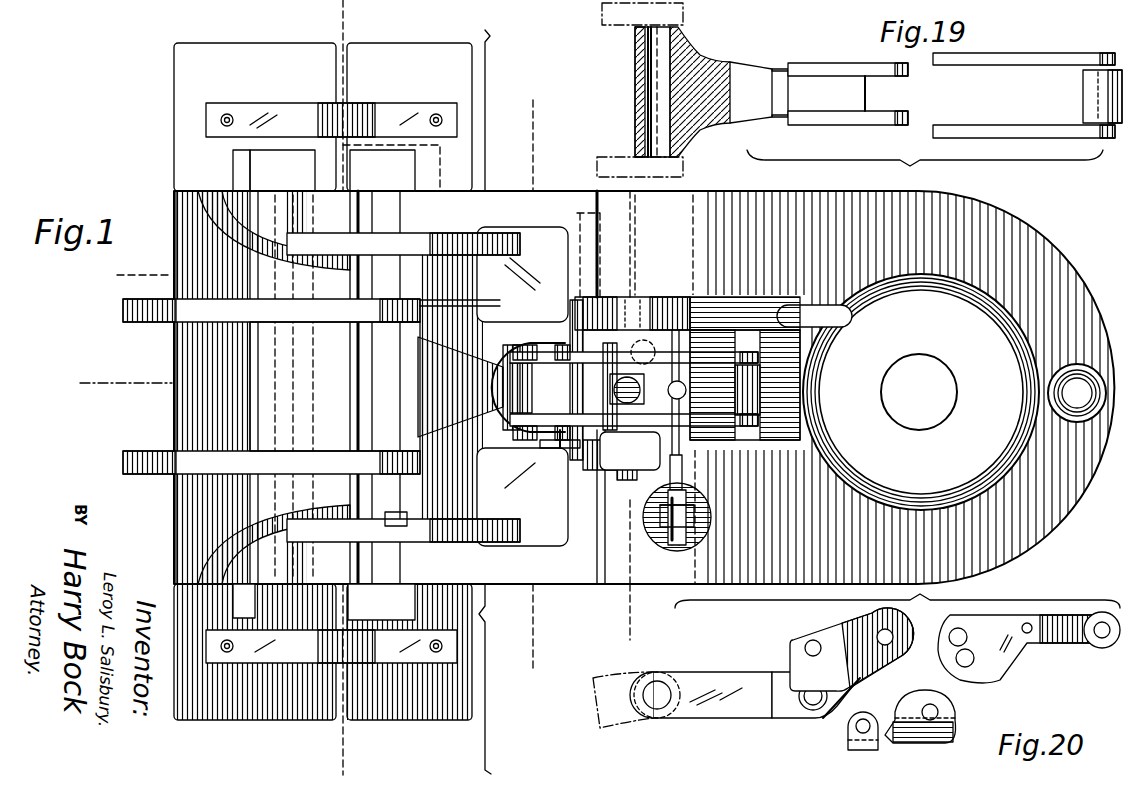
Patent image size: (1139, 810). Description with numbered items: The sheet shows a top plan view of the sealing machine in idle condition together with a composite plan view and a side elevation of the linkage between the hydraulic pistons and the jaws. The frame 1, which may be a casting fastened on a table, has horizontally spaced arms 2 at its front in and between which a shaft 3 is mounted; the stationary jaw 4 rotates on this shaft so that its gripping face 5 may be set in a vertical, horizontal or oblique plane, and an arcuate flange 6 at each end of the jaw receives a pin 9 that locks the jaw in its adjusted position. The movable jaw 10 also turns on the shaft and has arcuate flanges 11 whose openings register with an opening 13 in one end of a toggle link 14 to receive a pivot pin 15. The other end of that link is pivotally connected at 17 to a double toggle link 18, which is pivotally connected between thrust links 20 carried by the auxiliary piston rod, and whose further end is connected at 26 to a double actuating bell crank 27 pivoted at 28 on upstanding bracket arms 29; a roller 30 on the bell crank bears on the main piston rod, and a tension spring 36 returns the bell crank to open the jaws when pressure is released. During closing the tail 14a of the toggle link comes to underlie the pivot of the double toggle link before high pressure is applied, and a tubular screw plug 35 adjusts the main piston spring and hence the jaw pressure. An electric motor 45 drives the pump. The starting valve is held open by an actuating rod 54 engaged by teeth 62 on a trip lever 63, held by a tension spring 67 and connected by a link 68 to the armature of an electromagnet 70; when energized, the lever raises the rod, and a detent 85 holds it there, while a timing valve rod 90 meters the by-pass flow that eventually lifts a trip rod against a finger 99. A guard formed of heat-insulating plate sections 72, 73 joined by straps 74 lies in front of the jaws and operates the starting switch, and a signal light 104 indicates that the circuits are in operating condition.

In FIG. 1, the frame 1 is at (528, 582).
In FIG. 1, the arms 2 is at (105, 374).
In FIG. 1, the shaft 3 is at (360, 188).
In FIG. 1, the jaw 4 is at (438, 302).
In FIG. 1, the gripping face 5 is at (626, 185).
In FIG. 1, the arcuate flange 6 is at (546, 115).
In FIG. 1, the pin 9 is at (117, 266).
In FIG. 1, the movable jaw 10 is at (184, 398).
In FIG. 1, the arcuate flanges 11 is at (356, 15).
In FIG. 19, the arcuate flanges 11 is at (617, 28).
In FIG. 20, the arcuate flanges 11 is at (605, 700).
In FIG. 19, the opening 13 is at (716, 60).
In FIG. 20, the opening 13 is at (668, 681).
In FIG. 1, the toggle link 14 is at (386, 381).
In FIG. 20, the toggle link 14 is at (735, 679).
In FIG. 1, the tail 14a is at (560, 448).
In FIG. 19, the tail 14a is at (864, 98).
In FIG. 20, the tail 14a is at (846, 675).
In FIG. 1, the pivot pin 15 is at (392, 522).
In FIG. 19, the pivot pin 15 is at (635, 107).
In FIG. 20, the pivot pin 15 is at (657, 680).
In FIG. 20, the pivotal connection 17 is at (810, 706).
In FIG. 1, the double toggle link 18 is at (545, 383).
In FIG. 19, the double toggle link 18 is at (827, 66).
In FIG. 20, the double toggle link 18 is at (826, 635).
In FIG. 1, the thrust links 20 is at (529, 280).
In FIG. 20, the thrust links 20 is at (848, 744).
In FIG. 1, the pivotal connection 26 is at (598, 362).
In FIG. 1, the actuating bell crank 27 is at (705, 333).
In FIG. 19, the actuating bell crank 27 is at (983, 130).
In FIG. 20, the actuating bell crank 27 is at (1016, 650).
In FIG. 1, the pivot 28 is at (592, 462).
In FIG. 1, the bracket arms 29 is at (648, 298).
In FIG. 20, the bracket arms 29 is at (945, 713).
In FIG. 1, the roller 30 is at (746, 366).
In FIG. 19, the roller 30 is at (1083, 101).
In FIG. 20, the roller 30 is at (1098, 649).
In FIG. 1, the tubular screw plug 35 is at (797, 386).
In FIG. 1, the tension spring 36 is at (627, 396).
In FIG. 1, the electric motor 45 is at (814, 316).
In FIG. 1, the actuating rod 54 is at (660, 333).
In FIG. 1, the teeth 62 is at (672, 395).
In FIG. 1, the trip lever 63 is at (670, 474).
In FIG. 1, the tension spring 67 is at (650, 522).
In FIG. 1, the link 68 is at (663, 542).
In FIG. 1, the electromagnet 70 is at (652, 531).
In FIG. 1, the plate section 72 is at (395, 52).
In FIG. 1, the plate section 73 is at (292, 48).
In FIG. 1, the straps 74 is at (334, 106).
In FIG. 1, the detent 85 is at (681, 426).
In FIG. 1, the valve rod 90 is at (632, 389).
In FIG. 1, the finger 99 is at (630, 305).
In FIG. 1, the signal light 104 is at (1080, 368).